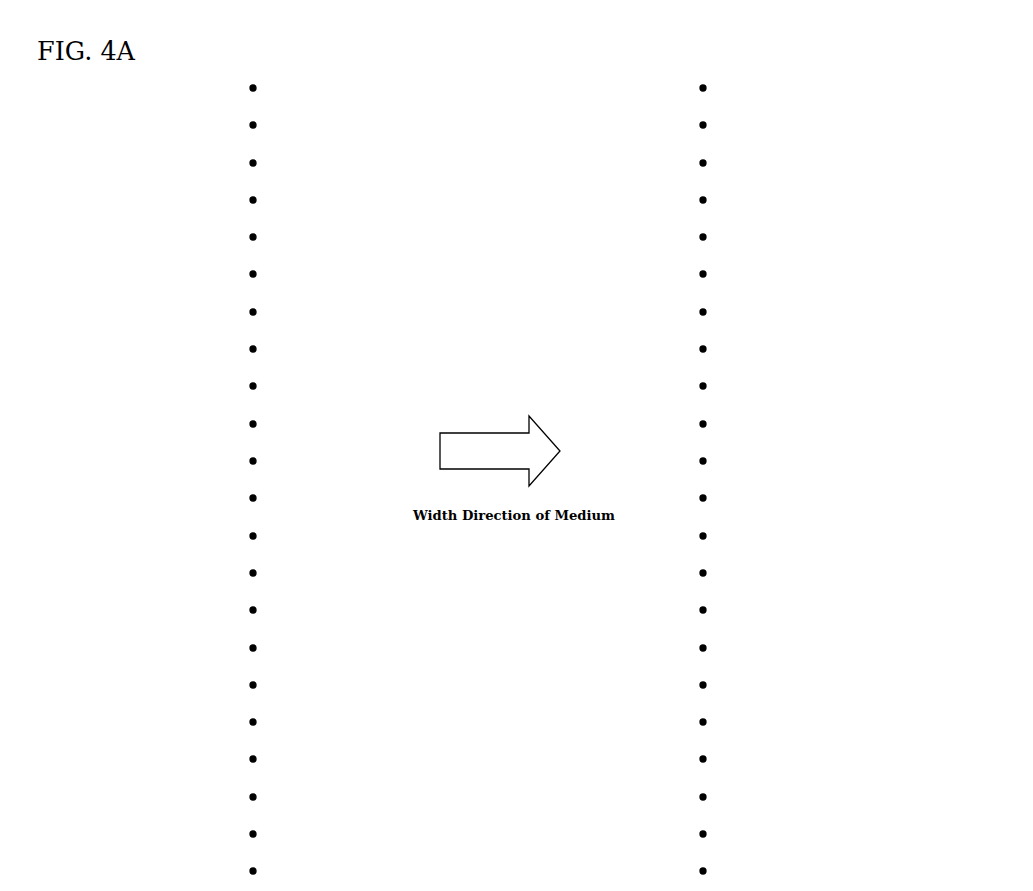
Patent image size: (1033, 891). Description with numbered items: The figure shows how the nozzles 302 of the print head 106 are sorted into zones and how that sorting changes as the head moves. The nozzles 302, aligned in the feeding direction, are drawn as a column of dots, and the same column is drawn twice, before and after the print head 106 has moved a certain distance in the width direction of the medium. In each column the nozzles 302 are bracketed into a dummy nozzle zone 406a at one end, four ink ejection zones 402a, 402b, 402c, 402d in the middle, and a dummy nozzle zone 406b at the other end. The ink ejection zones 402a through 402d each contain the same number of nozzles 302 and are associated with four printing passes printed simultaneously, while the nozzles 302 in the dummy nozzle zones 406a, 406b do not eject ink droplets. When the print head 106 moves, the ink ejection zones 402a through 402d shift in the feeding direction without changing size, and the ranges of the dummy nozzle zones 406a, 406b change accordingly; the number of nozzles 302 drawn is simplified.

The print head 106 is at (291, 52).
The nozzle 302 is at (256, 90).
The ink ejection zone 402a is at (279, 225).
The ink ejection zone 402b is at (279, 375).
The ink ejection zone 402c is at (279, 525).
The ink ejection zone 402d is at (279, 675).
The dummy nozzle zone 406a is at (231, 78).
The dummy nozzle zone 406b is at (231, 820).